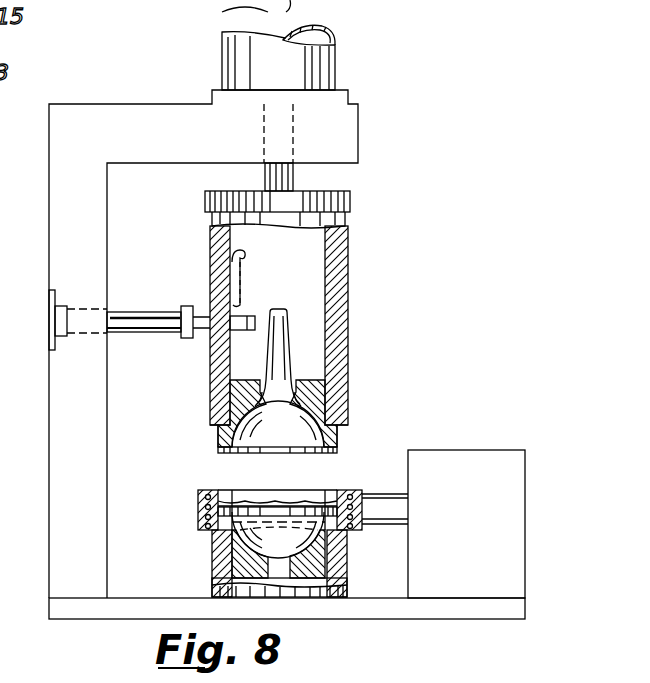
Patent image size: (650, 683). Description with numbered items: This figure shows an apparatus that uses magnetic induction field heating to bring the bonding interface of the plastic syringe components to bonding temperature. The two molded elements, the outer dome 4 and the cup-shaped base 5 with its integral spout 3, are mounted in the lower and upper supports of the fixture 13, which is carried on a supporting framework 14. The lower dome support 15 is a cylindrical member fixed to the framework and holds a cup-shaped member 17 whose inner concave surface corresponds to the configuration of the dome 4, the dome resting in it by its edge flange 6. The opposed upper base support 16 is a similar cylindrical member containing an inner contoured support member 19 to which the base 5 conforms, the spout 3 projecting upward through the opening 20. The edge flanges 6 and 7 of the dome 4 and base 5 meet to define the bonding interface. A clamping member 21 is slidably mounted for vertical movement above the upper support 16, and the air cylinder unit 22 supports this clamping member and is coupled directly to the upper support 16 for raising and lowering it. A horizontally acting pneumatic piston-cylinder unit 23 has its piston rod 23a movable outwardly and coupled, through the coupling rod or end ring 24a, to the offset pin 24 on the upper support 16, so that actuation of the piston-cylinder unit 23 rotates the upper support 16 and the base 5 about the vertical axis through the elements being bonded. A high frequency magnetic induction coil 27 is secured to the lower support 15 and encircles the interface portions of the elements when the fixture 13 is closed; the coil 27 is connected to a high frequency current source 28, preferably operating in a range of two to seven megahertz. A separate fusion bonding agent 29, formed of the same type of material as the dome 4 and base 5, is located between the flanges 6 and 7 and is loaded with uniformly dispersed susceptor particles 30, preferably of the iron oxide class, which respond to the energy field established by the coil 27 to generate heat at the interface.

The spout 3 is at (286, 345).
The dome 4 is at (291, 556).
The base 5 is at (291, 441).
The edge flange 6 is at (275, 512).
The edge flange 7 is at (338, 452).
The fixture 13 is at (452, 619).
The supporting framework 14 is at (50, 216).
The lower dome support 15 is at (212, 567).
The upper base support 16 is at (343, 328).
The cup-shaped member 17 is at (322, 571).
The contoured support member 19 is at (322, 402).
The opening 20 is at (296, 396).
The clamping member 21 is at (351, 200).
The air cylinder unit 22 is at (340, 69).
The pneumatic piston-cylinder unit 23 is at (130, 312).
The piston rod 23a is at (204, 332).
The pin 24 is at (247, 258).
The coupling rod 24a is at (254, 318).
The high frequency magnetic induction coil 27 is at (198, 505).
The high frequency current source 28 is at (487, 450).
The fusion bonding agent 29 is at (232, 507).
The susceptor particles 30 is at (332, 516).